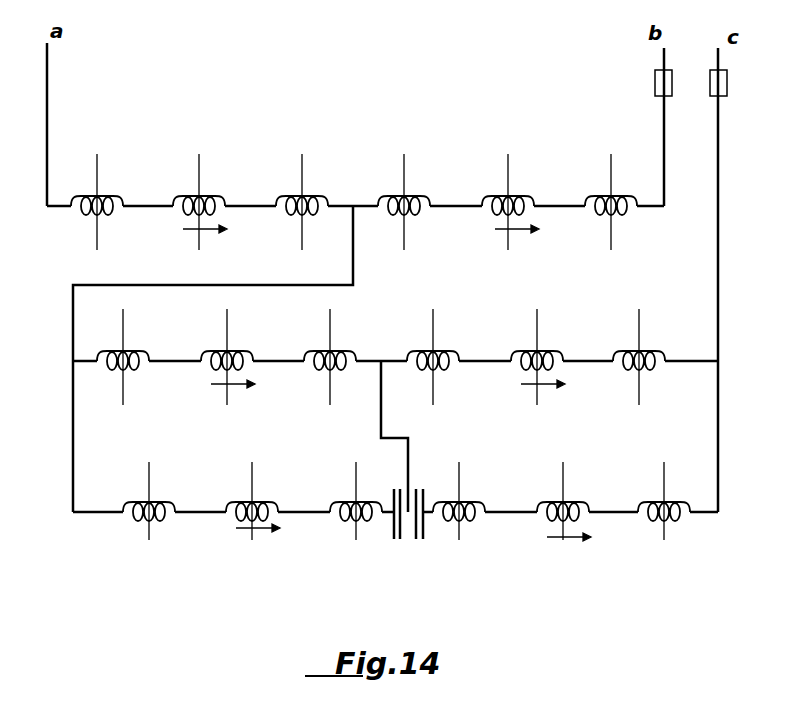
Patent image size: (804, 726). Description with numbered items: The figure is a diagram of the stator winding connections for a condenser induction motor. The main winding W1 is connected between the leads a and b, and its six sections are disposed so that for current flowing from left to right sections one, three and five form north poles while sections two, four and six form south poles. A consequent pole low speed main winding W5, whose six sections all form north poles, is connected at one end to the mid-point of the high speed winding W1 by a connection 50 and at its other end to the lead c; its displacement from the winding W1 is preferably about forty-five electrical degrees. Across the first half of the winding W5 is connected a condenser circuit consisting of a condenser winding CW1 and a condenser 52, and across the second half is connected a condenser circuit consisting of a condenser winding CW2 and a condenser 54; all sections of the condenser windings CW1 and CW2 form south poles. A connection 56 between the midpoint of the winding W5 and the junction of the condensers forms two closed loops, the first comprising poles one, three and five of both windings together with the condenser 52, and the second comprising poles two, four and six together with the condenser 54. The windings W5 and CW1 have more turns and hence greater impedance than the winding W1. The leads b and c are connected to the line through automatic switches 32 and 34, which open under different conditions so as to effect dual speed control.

The switch 32 is at (655, 85).
The switch 34 is at (727, 85).
The connection 50 is at (203, 284).
The connection 56 is at (399, 437).
The condenser 52 is at (393, 530).
The condenser 54 is at (425, 535).
The main winding W1 is at (72, 216).
The consequent pole low speed main winding W5 is at (93, 370).
The condenser winding CW1 is at (128, 527).
The condenser winding CW2 is at (578, 528).